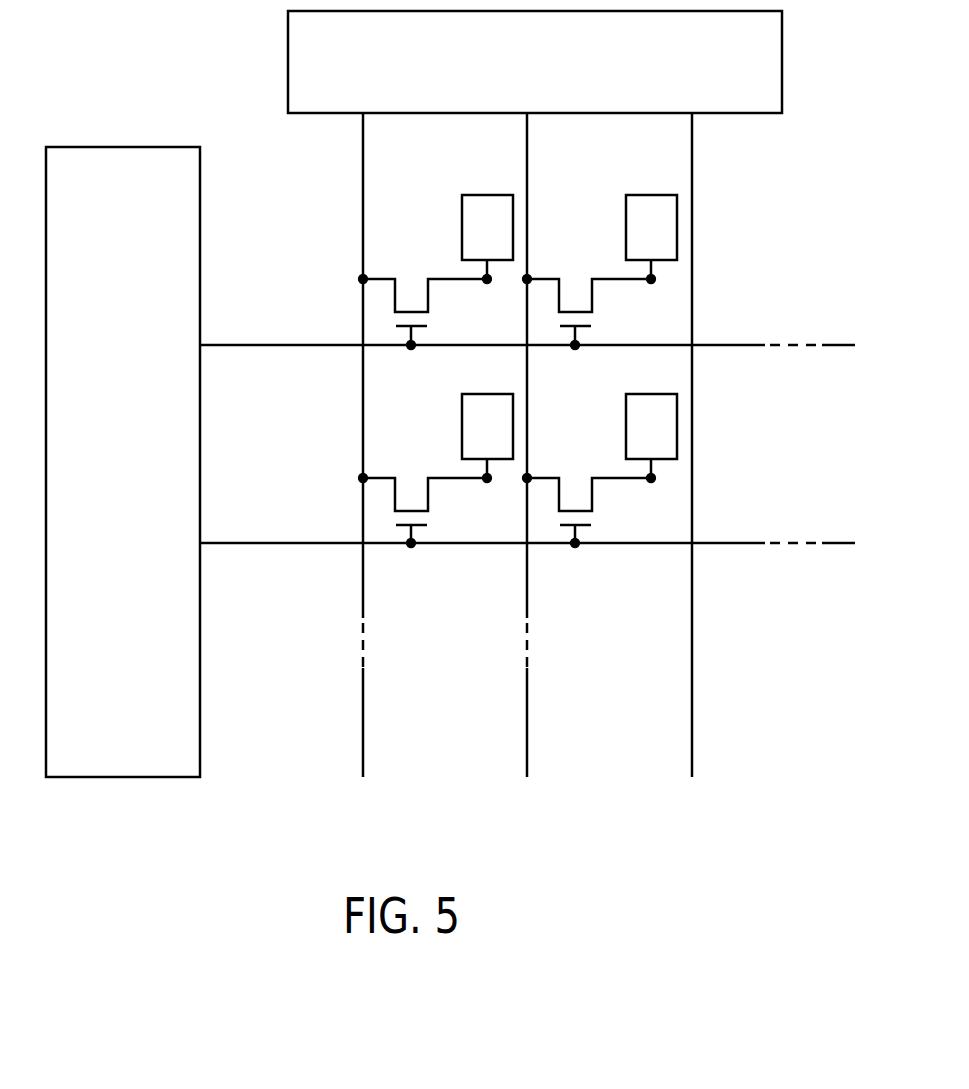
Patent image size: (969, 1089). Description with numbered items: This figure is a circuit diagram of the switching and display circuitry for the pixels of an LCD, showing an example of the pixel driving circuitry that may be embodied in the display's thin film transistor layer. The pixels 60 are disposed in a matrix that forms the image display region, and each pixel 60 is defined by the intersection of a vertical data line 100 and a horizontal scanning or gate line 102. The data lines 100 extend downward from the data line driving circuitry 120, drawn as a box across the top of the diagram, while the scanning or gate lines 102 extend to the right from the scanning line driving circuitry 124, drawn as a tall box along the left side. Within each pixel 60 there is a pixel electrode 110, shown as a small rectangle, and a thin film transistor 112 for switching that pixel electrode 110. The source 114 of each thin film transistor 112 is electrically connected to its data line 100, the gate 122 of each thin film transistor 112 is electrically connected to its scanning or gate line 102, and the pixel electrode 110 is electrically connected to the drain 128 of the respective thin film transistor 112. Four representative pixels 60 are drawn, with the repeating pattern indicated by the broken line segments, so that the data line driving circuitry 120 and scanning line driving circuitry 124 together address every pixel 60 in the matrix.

The pixel 60 is at (333, 283).
The data line 100 is at (525, 727).
The scanning or gate line 102 is at (277, 346).
The pixel electrode 110 is at (489, 195).
The thin film transistor 112 is at (436, 328).
The source 114 is at (365, 278).
The data line driving circuitry 120 is at (288, 60).
The gate 122 is at (413, 347).
The scanning line driving circuitry 124 is at (126, 147).
The drain 128 is at (485, 278).